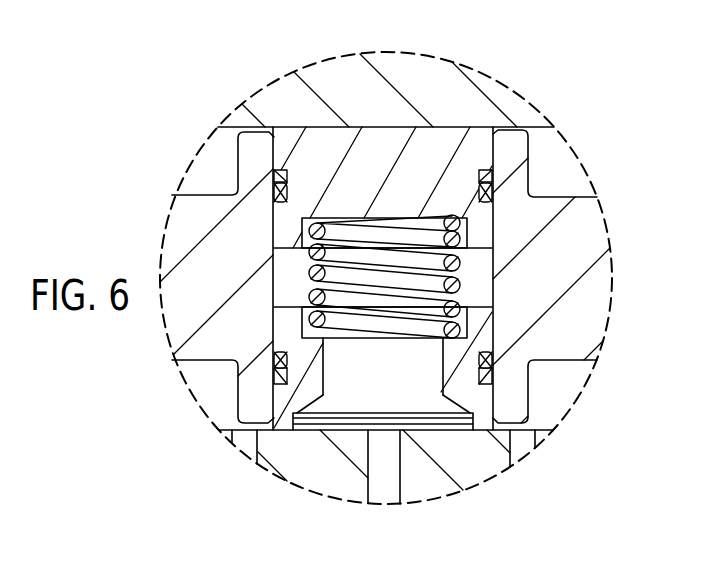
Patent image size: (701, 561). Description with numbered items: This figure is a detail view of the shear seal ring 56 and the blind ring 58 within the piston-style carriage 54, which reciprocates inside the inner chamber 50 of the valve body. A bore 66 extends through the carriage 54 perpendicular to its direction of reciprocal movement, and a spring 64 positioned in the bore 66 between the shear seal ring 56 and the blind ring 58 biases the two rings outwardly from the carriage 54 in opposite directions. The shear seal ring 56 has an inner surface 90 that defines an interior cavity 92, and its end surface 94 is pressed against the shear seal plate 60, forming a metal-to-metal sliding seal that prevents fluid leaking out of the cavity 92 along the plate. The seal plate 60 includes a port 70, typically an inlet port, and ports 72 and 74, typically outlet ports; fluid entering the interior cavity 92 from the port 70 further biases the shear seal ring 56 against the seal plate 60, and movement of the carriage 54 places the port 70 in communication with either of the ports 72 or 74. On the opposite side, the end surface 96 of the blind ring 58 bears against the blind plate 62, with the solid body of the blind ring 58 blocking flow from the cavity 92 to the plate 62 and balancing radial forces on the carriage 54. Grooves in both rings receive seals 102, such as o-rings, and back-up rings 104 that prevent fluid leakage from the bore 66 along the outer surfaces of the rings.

The inner chamber 50 is at (552, 170).
The carriage 54 is at (597, 216).
The shear seal ring 56 is at (298, 408).
The blind shear ring 58 is at (447, 133).
The shear seal plate 60 is at (473, 465).
The blind plate 62 is at (522, 103).
The spring 64 is at (452, 285).
The bore 66 is at (495, 287).
The port 70 is at (398, 486).
The port 72 is at (233, 437).
The port 74 is at (530, 438).
The inner surface 90 is at (325, 370).
The interior cavity 92 is at (412, 373).
The end surface 94 is at (285, 430).
The end surface 96 is at (382, 125).
The seal 102 is at (276, 200).
The back-up ring 104 is at (280, 172).